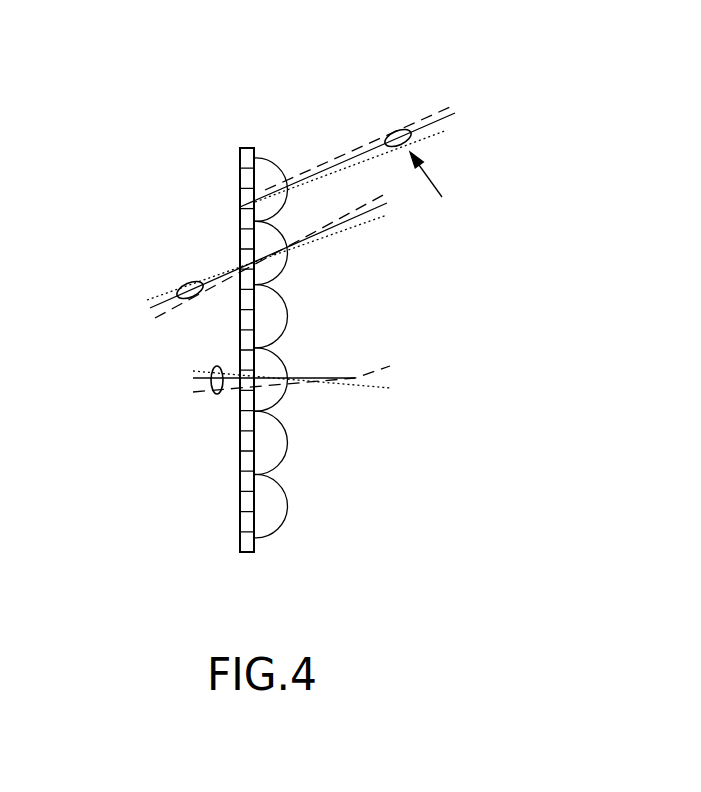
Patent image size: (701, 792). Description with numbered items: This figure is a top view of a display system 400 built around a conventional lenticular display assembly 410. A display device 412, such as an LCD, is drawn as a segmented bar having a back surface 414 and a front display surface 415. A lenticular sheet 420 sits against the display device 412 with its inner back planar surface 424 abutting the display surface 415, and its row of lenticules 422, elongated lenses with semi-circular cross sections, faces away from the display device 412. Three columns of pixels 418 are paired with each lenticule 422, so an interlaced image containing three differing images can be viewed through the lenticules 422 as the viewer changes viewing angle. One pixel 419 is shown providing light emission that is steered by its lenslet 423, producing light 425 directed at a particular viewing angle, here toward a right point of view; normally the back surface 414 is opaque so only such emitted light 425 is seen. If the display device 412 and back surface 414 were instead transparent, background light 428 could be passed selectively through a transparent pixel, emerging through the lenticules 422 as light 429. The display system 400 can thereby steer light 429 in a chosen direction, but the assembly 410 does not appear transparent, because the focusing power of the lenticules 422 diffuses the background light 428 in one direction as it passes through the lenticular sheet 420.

The display system 400 is at (84, 130).
The lenticular display assembly 410 is at (303, 127).
The display device 412 is at (240, 568).
The back surface 414 is at (240, 545).
The display surface 415 is at (255, 551).
The columns of pixels 418 is at (242, 530).
The pixel 419 is at (240, 208).
The lenticular sheet 420 is at (324, 547).
The lenticules 422 is at (297, 500).
The lenslet 423 is at (297, 208).
The back planar surface 424 is at (253, 152).
The light 425 is at (393, 130).
The background light 428 is at (183, 282).
The light 429 is at (360, 241).